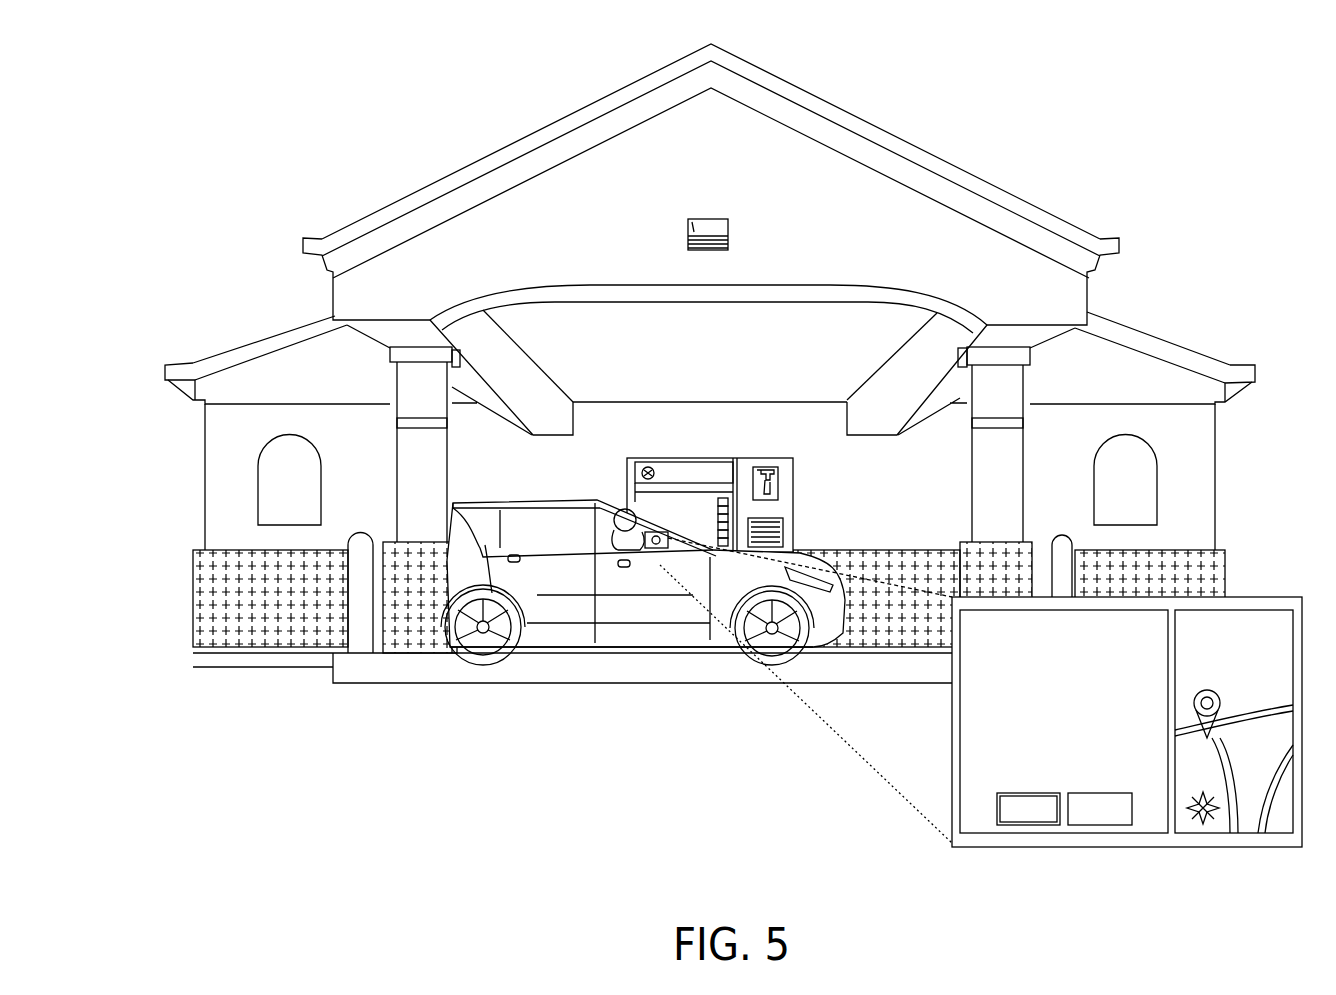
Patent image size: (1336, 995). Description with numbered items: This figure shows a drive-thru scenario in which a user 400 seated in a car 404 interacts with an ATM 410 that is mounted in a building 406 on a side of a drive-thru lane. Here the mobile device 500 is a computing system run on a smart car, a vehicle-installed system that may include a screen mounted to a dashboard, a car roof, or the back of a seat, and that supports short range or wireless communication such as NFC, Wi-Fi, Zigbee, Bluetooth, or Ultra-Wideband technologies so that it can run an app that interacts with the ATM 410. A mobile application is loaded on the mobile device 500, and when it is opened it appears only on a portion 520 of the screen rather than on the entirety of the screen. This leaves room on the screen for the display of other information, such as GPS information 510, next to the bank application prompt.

The user 400 is at (614, 508).
The car 404 is at (567, 640).
The building 406 is at (1216, 478).
The ATM 410 is at (745, 458).
The mobile device 500 is at (667, 552).
The GPS information 510 is at (1237, 610).
The portion of screen 520 is at (958, 738).